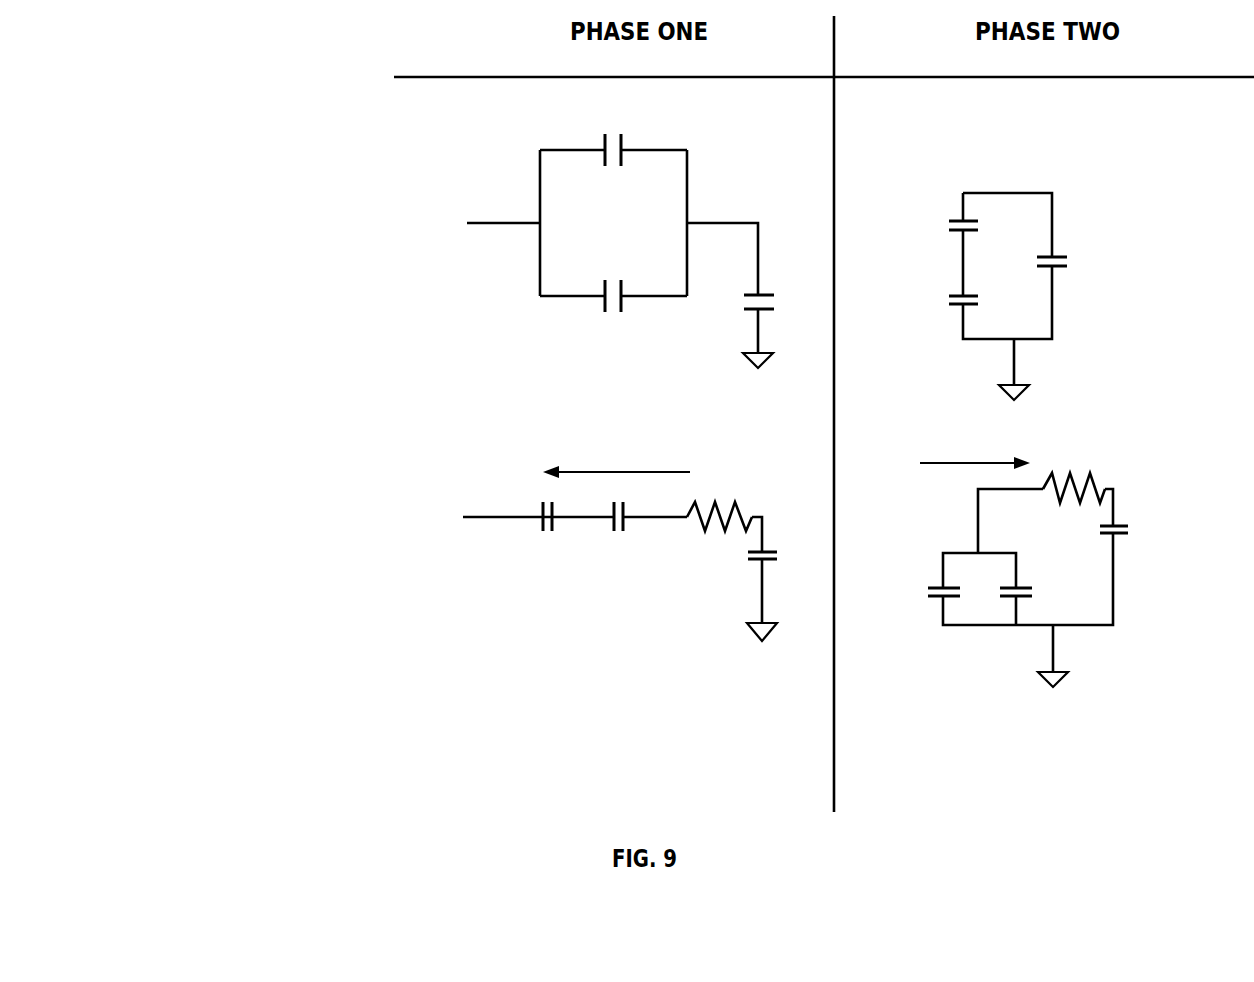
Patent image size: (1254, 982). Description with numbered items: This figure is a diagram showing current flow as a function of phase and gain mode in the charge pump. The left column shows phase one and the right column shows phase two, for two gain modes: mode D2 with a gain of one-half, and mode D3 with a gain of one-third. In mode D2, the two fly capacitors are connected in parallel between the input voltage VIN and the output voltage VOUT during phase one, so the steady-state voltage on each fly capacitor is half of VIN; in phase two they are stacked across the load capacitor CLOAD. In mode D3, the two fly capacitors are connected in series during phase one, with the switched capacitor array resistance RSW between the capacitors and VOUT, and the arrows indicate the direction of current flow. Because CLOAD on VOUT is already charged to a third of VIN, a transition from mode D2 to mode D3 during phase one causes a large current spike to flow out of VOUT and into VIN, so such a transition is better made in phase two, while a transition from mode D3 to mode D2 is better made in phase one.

The gain mode D2 is at (610, 267).
The gain mode D3 is at (644, 572).
The input voltage VIN is at (503, 347).
The output voltage VOUT is at (943, 328).
The load capacitor CLOAD is at (972, 430).
The switched capacitor array resistance RSW is at (894, 499).